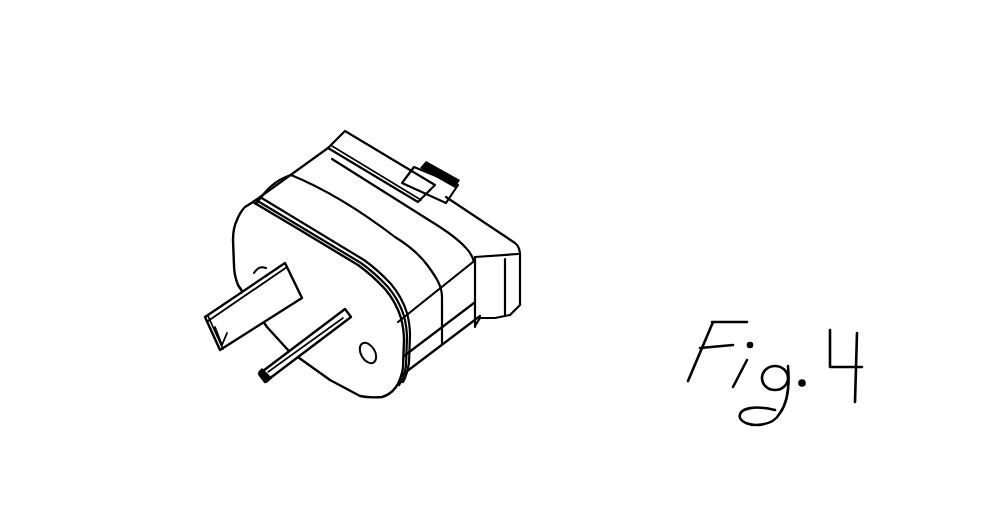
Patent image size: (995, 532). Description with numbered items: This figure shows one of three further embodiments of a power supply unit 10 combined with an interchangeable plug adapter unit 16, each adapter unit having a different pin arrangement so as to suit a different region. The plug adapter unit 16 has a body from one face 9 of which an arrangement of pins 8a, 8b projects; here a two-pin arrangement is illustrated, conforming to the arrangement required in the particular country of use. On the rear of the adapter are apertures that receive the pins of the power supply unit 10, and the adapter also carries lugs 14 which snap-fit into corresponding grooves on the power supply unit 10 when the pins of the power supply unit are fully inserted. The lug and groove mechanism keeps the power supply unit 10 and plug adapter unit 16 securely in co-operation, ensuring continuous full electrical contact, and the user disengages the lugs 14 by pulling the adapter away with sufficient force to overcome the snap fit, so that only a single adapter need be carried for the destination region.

The pin 8a is at (213, 347).
The pin 8b is at (268, 380).
The face 9 is at (343, 363).
The power supply unit 10 is at (378, 145).
The lug 14 is at (427, 183).
The plug adapter unit 16 is at (361, 259).